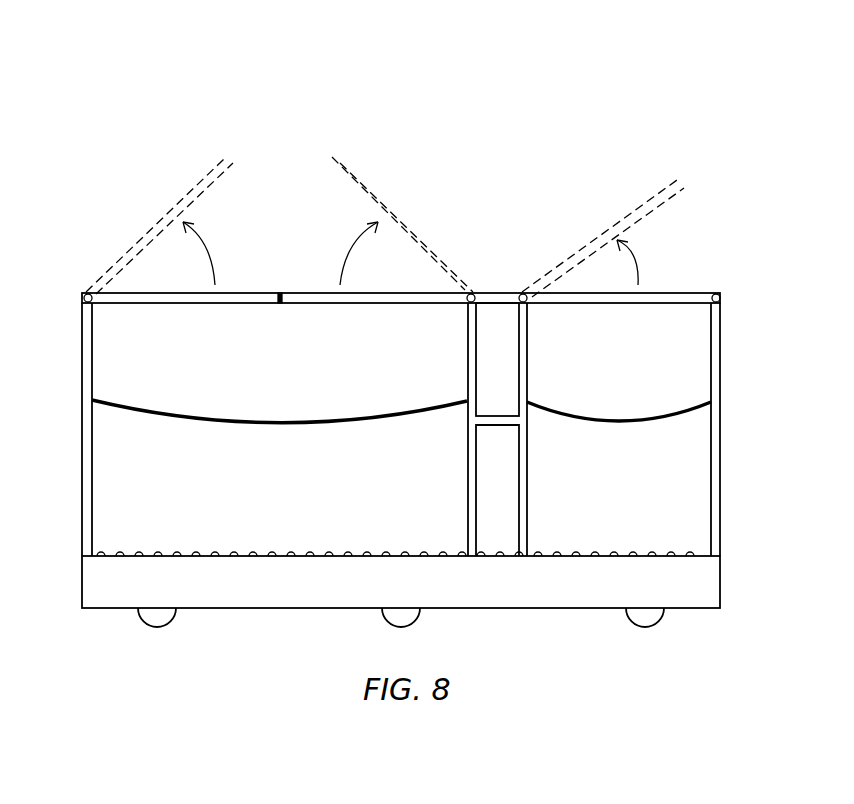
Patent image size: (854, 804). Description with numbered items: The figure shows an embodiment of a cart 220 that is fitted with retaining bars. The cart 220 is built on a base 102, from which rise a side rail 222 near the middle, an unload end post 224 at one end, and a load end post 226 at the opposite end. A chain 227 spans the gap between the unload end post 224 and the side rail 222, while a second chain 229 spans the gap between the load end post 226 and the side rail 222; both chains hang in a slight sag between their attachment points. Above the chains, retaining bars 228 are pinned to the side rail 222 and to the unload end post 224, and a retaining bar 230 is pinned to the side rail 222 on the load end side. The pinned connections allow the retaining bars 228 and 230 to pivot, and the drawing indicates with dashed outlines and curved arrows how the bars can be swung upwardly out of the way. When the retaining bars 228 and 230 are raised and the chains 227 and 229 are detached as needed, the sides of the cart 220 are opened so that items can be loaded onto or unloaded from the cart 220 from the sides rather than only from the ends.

The cart 220 is at (186, 67).
The side rail 222 is at (497, 296).
The unload end post 224 is at (87, 432).
The load end post 226 is at (717, 396).
The chain 227 is at (275, 425).
The retaining bars 228 is at (229, 150).
The chain 229 is at (615, 425).
The retaining bar 230 is at (688, 163).
The base 102 is at (705, 600).